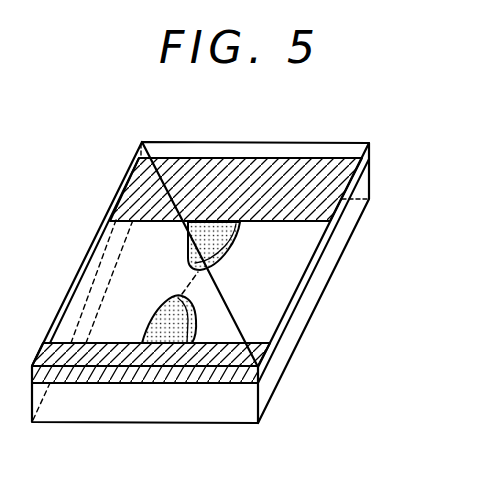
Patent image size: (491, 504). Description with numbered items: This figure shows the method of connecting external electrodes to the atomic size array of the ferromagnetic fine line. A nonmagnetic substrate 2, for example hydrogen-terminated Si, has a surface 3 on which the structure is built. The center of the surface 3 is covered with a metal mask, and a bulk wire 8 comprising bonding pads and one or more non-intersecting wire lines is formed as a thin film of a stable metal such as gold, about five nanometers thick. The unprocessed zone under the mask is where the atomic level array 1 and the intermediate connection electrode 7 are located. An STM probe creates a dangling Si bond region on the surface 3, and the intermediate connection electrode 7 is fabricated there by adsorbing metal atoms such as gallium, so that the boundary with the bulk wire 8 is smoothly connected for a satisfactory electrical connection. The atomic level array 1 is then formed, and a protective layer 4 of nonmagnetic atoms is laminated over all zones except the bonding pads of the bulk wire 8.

The atomic level array 1 is at (185, 283).
The nonmagnetic substrate 2 is at (280, 362).
The surface 3 is at (308, 292).
The protective layer 4 is at (325, 238).
The intermediate connection electrode 7 is at (186, 246).
The bulk wire 8 is at (340, 178).